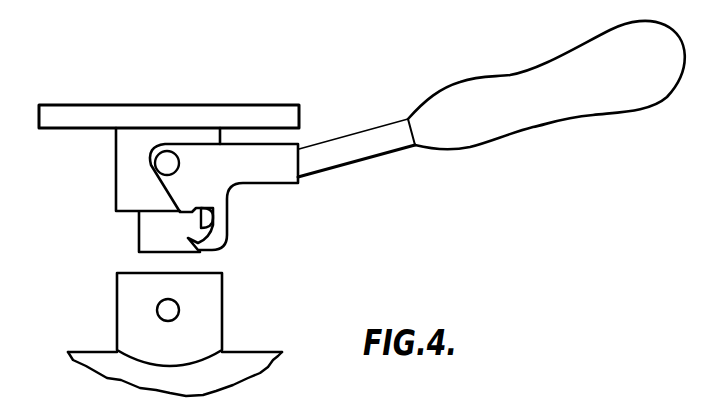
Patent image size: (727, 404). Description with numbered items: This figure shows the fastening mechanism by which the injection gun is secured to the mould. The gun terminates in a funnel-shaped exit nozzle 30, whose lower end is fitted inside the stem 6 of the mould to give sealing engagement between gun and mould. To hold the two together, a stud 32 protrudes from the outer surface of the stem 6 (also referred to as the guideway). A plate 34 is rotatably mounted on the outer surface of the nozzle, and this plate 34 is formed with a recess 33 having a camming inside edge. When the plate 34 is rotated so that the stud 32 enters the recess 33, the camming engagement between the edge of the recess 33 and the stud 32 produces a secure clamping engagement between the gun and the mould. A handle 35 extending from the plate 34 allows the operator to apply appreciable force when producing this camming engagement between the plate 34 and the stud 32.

The stem 6 is at (195, 330).
The exit nozzle 30 is at (127, 165).
The stud 32 is at (173, 310).
The recess 33 is at (185, 225).
The plate 34 is at (202, 190).
The handle 35 is at (518, 105).